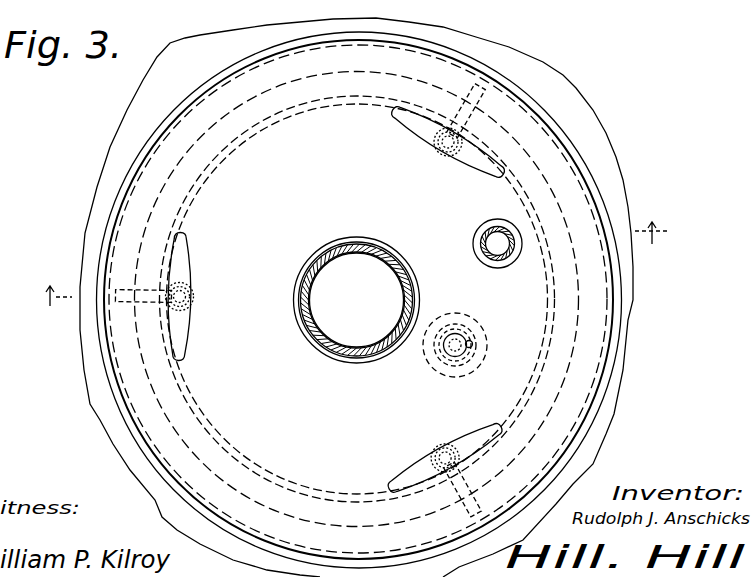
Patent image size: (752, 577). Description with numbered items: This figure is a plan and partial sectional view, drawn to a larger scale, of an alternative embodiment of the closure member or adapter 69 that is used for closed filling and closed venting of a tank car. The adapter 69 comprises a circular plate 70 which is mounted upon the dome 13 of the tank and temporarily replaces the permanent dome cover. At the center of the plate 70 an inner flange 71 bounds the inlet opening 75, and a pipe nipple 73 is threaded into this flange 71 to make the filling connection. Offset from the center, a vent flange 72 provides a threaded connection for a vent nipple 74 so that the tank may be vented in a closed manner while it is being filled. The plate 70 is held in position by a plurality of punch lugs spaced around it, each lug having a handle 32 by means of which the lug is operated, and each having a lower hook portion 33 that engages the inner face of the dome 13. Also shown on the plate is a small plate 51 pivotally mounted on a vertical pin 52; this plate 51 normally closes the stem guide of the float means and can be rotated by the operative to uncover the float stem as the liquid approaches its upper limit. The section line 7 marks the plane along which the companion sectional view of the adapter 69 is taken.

The section line 7- 7 is at (351, 265).
The dome 13 is at (609, 189).
The handle 32 is at (187, 266).
The lower hook portion 33 is at (308, 300).
The plate 51 is at (455, 343).
The vertical pin 52 is at (471, 345).
The closure member or adapter 69 is at (359, 300).
The circular plate 70 is at (244, 90).
The inner flange 71 is at (392, 248).
The vent flange 72 is at (503, 220).
The pipe nipple 73 is at (362, 245).
The vent nipple 74 is at (488, 229).
The inlet opening 75 is at (326, 318).